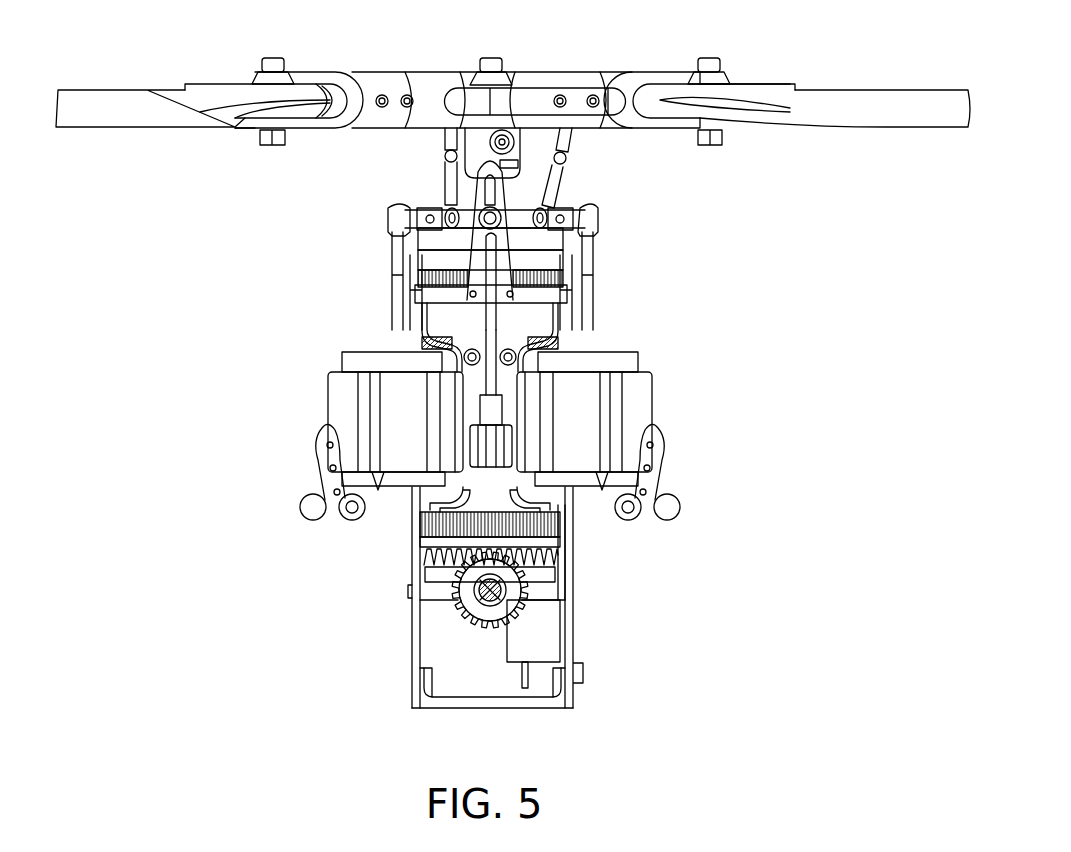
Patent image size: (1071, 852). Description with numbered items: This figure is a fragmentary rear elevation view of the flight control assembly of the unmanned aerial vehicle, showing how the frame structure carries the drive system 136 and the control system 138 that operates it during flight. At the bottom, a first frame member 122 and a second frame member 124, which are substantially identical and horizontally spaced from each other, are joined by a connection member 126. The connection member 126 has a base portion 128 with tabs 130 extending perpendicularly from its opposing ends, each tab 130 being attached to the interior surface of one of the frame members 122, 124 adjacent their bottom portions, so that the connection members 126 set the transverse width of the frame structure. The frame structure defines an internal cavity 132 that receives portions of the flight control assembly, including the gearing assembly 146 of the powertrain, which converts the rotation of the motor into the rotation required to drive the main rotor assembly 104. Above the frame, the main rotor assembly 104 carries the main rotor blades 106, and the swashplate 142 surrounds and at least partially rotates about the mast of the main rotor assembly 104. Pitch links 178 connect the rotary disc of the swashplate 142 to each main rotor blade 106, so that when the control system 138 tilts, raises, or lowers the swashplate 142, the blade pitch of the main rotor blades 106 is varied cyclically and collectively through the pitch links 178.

The main rotor assembly 104 is at (540, 80).
The main rotor blades 106 is at (882, 128).
The pitch links 178 is at (446, 160).
The swashplate 142 is at (552, 210).
The control system 138 is at (345, 380).
The drive system 136 is at (421, 522).
The gearing assembly 146 is at (565, 522).
The internal cavity 132 is at (442, 628).
The base portion 128 is at (468, 696).
The first frame member 122 is at (412, 682).
The second frame member 124 is at (574, 696).
The tabs 130 is at (422, 692).
The connection members 126 is at (502, 704).